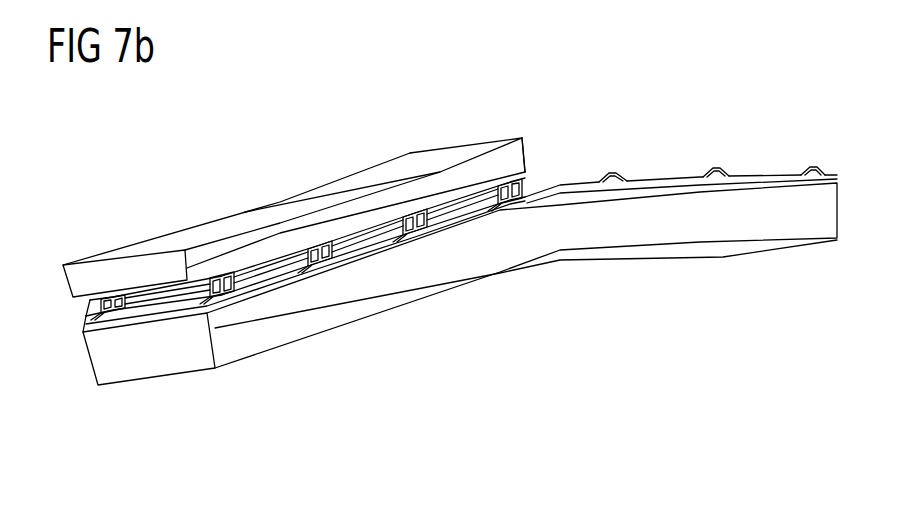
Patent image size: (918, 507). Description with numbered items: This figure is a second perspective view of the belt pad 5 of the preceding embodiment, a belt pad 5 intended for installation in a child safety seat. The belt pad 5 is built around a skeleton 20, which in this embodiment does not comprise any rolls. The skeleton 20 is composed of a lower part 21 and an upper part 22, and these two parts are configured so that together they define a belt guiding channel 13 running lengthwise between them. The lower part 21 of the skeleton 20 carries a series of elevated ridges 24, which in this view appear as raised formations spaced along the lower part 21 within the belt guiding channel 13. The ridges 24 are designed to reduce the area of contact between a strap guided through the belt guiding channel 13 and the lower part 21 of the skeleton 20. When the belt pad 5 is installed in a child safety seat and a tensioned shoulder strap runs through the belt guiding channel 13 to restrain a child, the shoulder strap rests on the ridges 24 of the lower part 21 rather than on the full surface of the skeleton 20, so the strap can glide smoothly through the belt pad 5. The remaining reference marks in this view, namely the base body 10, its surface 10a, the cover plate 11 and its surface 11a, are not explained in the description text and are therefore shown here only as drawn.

The belt pad 5 is at (306, 98).
The base body 10 is at (221, 402).
The surface of base body 10a is at (185, 362).
The cover plate 11 is at (84, 249).
The surface of cover plate 11a is at (447, 157).
The belt guiding channel 13 is at (572, 168).
The skeleton 20 is at (512, 126).
The lower part 21 is at (103, 328).
The upper part 22 is at (150, 318).
The elevated ridges 24 is at (153, 335).